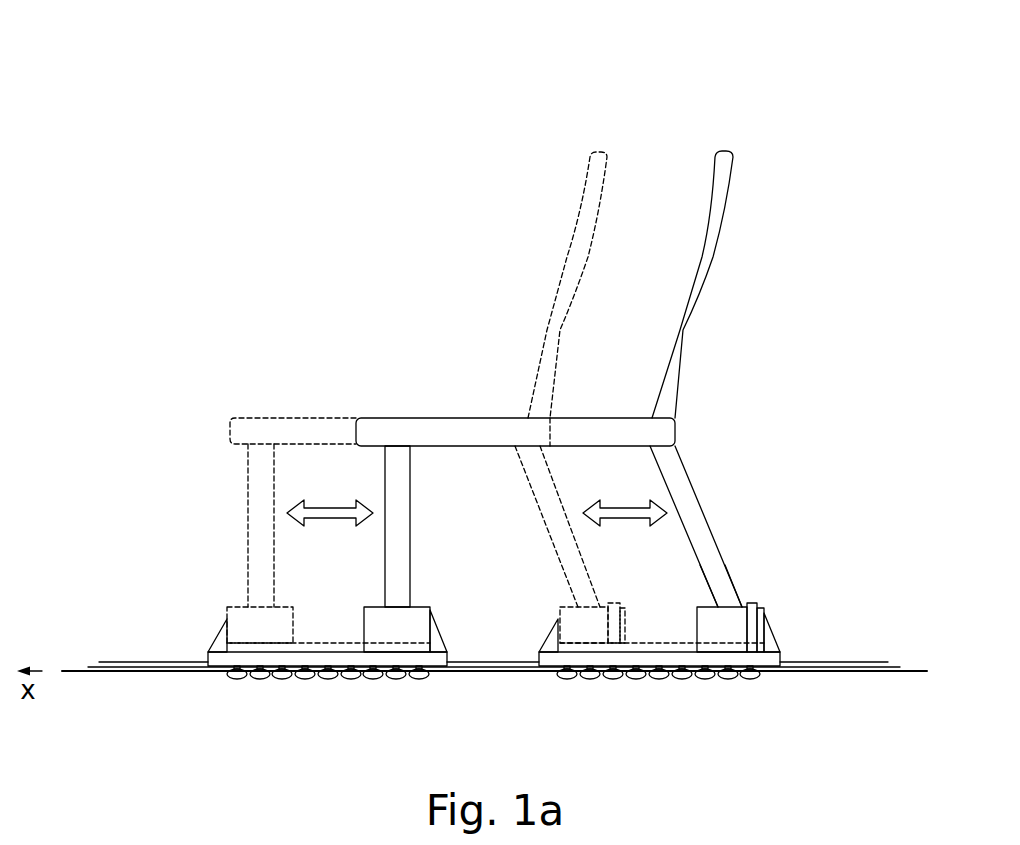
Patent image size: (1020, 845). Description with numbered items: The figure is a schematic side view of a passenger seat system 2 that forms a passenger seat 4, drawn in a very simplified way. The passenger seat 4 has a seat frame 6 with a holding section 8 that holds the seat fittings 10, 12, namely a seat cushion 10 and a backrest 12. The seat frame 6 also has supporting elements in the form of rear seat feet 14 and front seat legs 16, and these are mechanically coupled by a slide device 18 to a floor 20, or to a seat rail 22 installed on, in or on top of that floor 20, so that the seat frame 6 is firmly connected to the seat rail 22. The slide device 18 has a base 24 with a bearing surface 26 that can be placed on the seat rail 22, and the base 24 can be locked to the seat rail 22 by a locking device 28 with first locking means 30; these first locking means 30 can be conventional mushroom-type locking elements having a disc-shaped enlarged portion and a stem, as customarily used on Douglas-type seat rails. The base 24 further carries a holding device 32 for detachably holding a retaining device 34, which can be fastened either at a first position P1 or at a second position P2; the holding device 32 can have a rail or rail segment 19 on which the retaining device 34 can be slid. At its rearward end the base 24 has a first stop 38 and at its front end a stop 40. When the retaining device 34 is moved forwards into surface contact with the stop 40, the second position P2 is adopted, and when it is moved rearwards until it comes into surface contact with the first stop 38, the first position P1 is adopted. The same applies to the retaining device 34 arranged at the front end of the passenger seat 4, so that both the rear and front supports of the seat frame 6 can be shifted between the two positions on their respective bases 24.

The passenger seat system 2 is at (605, 77).
The passenger seat 4 is at (740, 347).
The seat frame 6 is at (677, 470).
The holding section 8 is at (563, 457).
The seat fitting (seat cushion) 10 is at (438, 418).
The seat fitting (backrest) 12 is at (712, 253).
The rear seat foot 14 is at (746, 552).
The front seat leg 16 is at (374, 567).
The slide device 18 is at (233, 704).
The rail segment 19 is at (342, 643).
The floor 20 is at (72, 669).
The seat rail 22 is at (128, 662).
The base 24 is at (650, 660).
The bearing surface 26 is at (595, 681).
The locking device 28 is at (777, 679).
The first locking means 30 is at (748, 680).
The holding device 32 is at (637, 634).
The retaining device 34 is at (410, 623).
The first stop 38 is at (438, 639).
The stop 40 is at (218, 641).
The first position P1 is at (410, 693).
The second position P2 is at (229, 595).